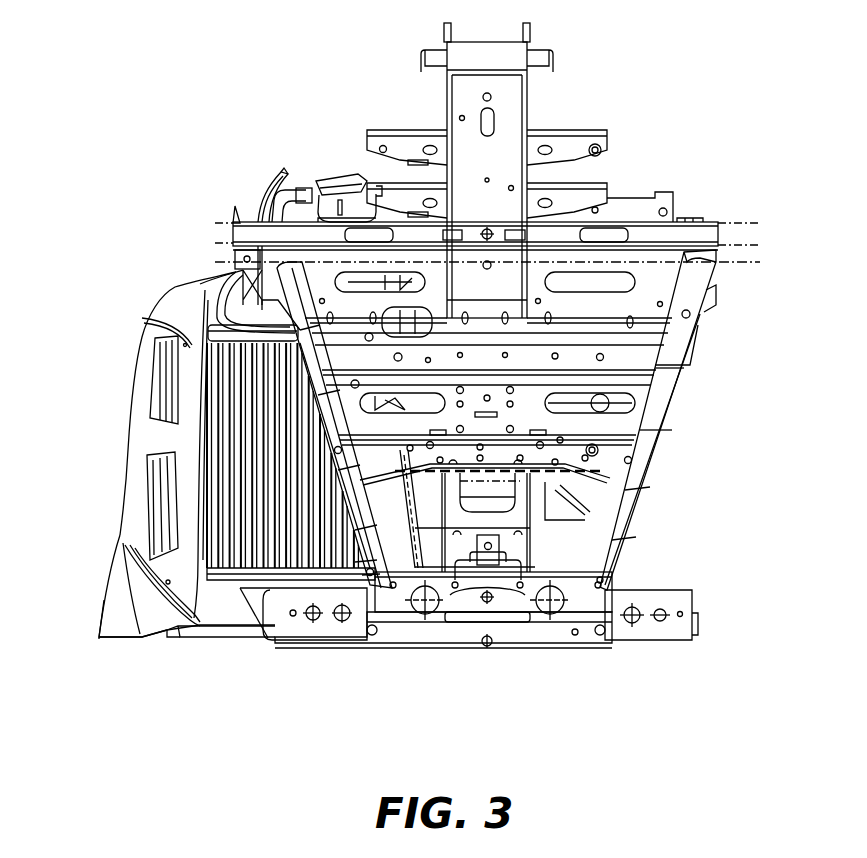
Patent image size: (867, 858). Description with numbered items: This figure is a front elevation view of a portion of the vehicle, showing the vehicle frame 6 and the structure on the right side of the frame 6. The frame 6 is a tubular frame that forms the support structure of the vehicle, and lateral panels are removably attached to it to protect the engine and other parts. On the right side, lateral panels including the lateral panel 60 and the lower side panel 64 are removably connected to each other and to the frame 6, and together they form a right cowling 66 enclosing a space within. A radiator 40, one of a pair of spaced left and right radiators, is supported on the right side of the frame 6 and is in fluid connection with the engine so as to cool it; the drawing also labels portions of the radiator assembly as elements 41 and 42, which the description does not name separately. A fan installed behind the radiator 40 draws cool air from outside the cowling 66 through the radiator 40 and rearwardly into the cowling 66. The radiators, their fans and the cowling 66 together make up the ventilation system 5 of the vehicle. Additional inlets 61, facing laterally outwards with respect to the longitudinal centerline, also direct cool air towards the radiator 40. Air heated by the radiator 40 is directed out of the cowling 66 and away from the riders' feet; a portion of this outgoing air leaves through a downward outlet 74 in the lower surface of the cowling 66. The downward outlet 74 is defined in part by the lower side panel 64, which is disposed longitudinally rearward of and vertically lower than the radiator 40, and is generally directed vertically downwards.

The ventilation system 5 is at (95, 568).
The frame 6 is at (662, 378).
The radiator 40 is at (240, 497).
The radiator core 41 is at (240, 465).
The radiator top tank 42 is at (240, 340).
The lateral panel 60 is at (176, 308).
The additional inlet 61 is at (160, 395).
The lower side panel 64 is at (112, 620).
The cowling 66 is at (197, 290).
The downward outlet 74 is at (175, 635).